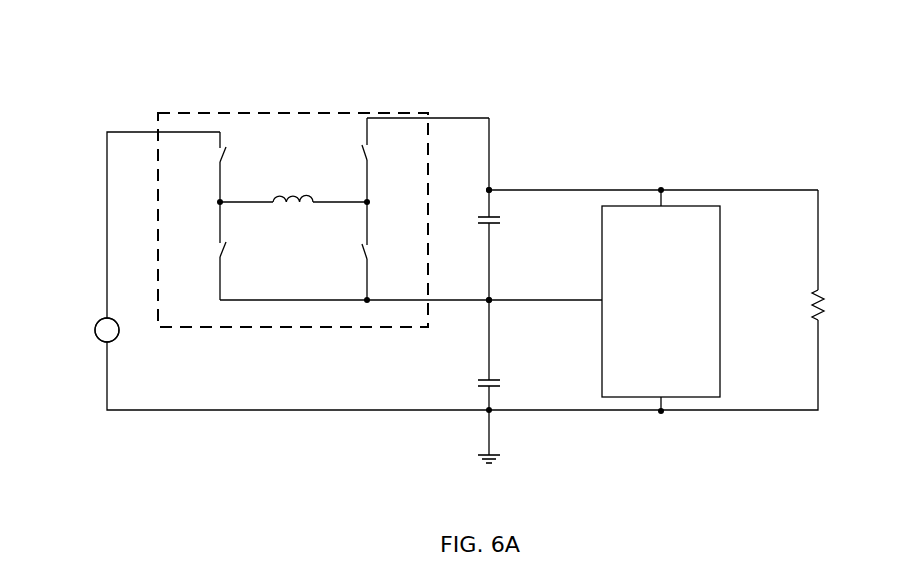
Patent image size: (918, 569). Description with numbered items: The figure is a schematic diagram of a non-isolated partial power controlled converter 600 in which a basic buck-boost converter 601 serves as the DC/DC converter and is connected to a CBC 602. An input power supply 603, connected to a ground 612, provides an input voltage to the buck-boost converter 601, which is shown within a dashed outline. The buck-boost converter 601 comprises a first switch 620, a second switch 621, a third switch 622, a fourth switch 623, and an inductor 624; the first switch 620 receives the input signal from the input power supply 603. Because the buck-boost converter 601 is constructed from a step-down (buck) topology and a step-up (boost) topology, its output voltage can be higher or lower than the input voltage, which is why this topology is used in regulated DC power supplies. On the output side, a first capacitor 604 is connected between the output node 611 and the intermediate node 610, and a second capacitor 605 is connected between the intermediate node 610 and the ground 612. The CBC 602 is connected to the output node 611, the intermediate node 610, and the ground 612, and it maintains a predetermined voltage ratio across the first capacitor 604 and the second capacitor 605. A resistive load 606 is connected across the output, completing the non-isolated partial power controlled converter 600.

The non-isolated partial power controlled converter 600 is at (104, 84).
The buck-boost converter 601 is at (365, 113).
The CBC 602 is at (689, 206).
The input power supply 603 is at (96, 338).
The first capacitor 604 is at (493, 231).
The second capacitor 605 is at (497, 392).
The resistive load 606 is at (826, 323).
The intermediate node 610 is at (492, 303).
The output node 611 is at (492, 188).
The ground 612 is at (485, 436).
The first switch 620 is at (217, 159).
The second switch 621 is at (217, 257).
The third switch 622 is at (362, 156).
The fourth switch 623 is at (362, 258).
The inductor 624 is at (295, 205).